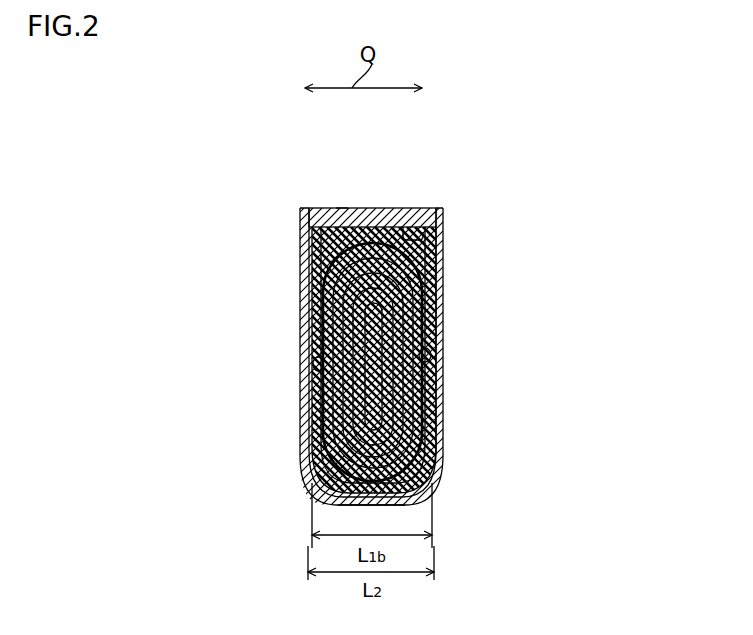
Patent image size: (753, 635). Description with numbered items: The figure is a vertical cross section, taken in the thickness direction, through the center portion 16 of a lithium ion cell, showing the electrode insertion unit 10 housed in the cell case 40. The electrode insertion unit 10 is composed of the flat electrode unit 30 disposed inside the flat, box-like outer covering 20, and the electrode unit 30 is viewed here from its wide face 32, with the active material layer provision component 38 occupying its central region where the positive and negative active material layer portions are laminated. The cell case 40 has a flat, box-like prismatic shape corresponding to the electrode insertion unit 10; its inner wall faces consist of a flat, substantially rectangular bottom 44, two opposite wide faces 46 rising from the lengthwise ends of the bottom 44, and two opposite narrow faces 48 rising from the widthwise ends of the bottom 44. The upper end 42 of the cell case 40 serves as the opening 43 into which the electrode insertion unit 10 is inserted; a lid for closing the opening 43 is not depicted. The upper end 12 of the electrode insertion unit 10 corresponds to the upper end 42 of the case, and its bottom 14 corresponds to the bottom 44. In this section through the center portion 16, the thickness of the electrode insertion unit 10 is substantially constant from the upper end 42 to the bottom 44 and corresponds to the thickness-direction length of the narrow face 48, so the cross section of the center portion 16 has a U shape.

The electrode insertion unit 10 is at (319, 220).
The upper end of electrode insertion unit 12 is at (438, 237).
The bottom of electrode insertion unit 14 is at (366, 516).
The center portion 16 is at (308, 413).
The outer covering 20 is at (387, 222).
The electrode unit 30 is at (362, 234).
The wide face 32 is at (435, 362).
The active material layer provision component 38 is at (402, 434).
The cell case 40 is at (281, 267).
The upper end 42 is at (445, 213).
The opening 43 is at (342, 208).
The bottom 44 is at (393, 508).
The wide faces 46 is at (440, 305).
The narrow faces 48 is at (413, 218).